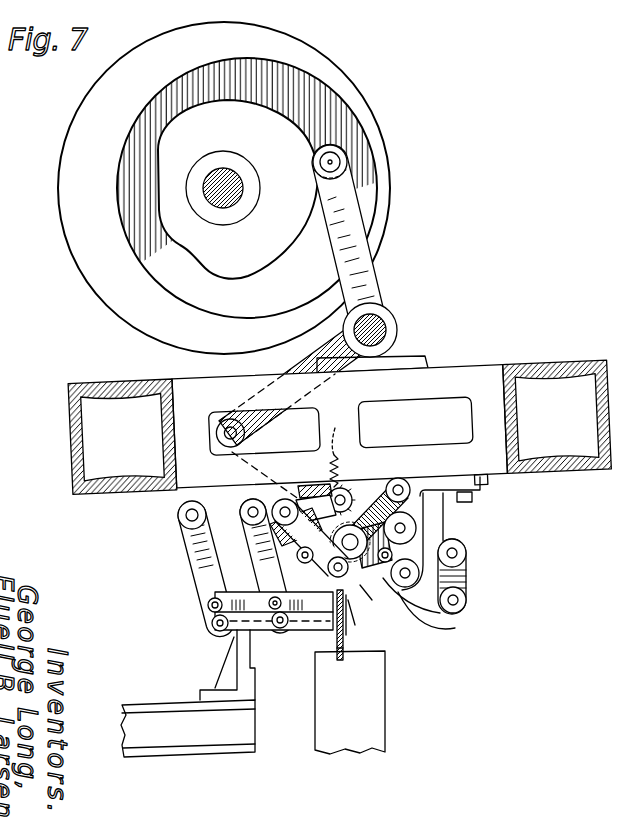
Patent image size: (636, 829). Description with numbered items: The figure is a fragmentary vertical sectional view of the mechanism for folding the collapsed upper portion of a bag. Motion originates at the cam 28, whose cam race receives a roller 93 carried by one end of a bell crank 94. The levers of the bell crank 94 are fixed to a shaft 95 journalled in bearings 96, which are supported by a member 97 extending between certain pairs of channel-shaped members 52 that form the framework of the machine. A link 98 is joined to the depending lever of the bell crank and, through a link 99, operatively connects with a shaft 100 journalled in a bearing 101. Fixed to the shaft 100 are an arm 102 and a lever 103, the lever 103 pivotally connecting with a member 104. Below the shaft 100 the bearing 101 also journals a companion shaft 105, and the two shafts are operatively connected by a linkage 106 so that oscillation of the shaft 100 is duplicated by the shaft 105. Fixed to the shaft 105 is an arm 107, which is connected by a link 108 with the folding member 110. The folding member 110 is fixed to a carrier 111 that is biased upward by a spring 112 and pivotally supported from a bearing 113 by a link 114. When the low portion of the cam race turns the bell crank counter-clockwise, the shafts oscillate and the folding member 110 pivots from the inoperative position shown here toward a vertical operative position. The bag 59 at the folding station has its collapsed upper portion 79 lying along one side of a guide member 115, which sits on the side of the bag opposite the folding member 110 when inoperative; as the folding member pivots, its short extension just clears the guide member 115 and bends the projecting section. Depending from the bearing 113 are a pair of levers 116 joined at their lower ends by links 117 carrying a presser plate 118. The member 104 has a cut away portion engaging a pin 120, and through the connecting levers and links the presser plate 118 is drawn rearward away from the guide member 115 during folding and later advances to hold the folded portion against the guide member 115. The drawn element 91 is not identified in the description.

The cam 28 is at (335, 64).
The channel-shaped members 52 is at (103, 380).
The bag 59 is at (316, 708).
The collapsed upper portion 79 is at (355, 625).
The connecting link 91 is at (362, 228).
The roller 93 is at (348, 155).
The bell crank 94 is at (290, 372).
The shaft 95 is at (383, 322).
The bearings 96 is at (398, 330).
The member 97 is at (461, 378).
The link 98 is at (264, 432).
The link 99 is at (353, 488).
The shaft 100 is at (412, 528).
The bearing 101 is at (437, 497).
The arm 102 is at (389, 486).
The lever 103 is at (414, 486).
The member 104 is at (306, 563).
The companion shaft 105 is at (442, 616).
The linkage 106 is at (467, 572).
The arm 107 is at (392, 600).
The link 108 is at (446, 541).
The folding member 110 is at (372, 600).
The carrier 111 is at (262, 543).
The spring 112 is at (337, 428).
The bearing 113 is at (232, 490).
The link 114 is at (305, 486).
The guide member 115 is at (330, 640).
The levers 116 is at (200, 560).
The links 117 is at (228, 634).
The presser plate 118 is at (337, 652).
The pin 120 is at (268, 574).